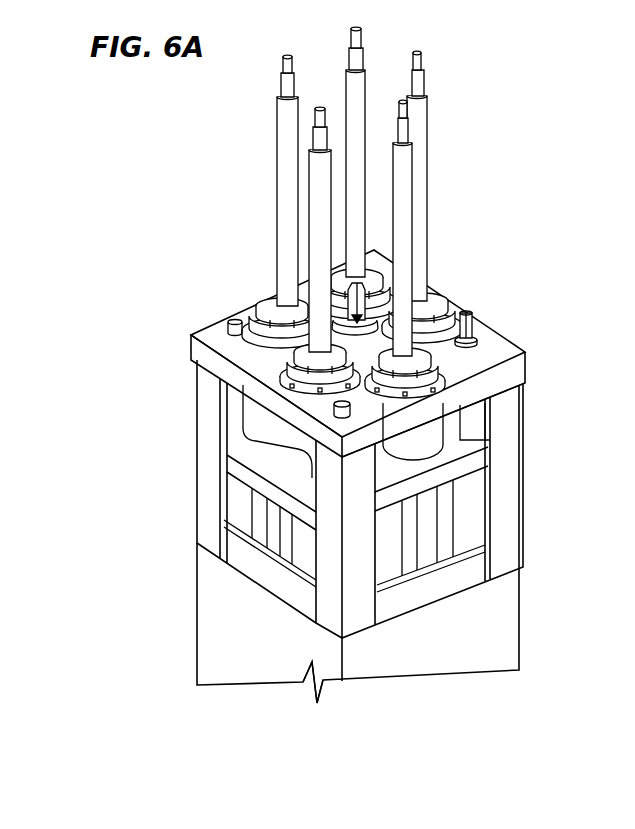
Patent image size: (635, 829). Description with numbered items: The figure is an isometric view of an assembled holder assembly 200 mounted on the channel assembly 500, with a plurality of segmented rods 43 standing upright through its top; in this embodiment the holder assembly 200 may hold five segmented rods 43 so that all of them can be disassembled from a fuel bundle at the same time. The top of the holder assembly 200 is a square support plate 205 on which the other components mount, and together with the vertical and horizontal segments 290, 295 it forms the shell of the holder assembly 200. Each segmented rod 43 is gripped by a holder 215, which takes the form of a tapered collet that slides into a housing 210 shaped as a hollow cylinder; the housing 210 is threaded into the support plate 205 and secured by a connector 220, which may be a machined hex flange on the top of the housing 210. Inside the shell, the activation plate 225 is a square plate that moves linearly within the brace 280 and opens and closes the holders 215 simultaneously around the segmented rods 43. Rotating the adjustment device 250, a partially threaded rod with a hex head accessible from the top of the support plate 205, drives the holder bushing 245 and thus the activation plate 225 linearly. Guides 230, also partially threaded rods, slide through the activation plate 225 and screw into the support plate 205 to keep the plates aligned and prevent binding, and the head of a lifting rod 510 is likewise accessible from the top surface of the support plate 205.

The segmented rod 43 is at (229, 154).
The holder assembly 200 is at (494, 714).
The support plate 205 is at (497, 342).
The housing 210 is at (283, 455).
The holder 215 is at (283, 330).
The connector 220 is at (318, 392).
The activation plate 225 is at (453, 485).
The guide 230 is at (228, 325).
The holder bushing 245 is at (473, 430).
The adjustment device 250 is at (470, 312).
The brace 280 is at (181, 544).
The vertical segment 290 is at (327, 543).
The horizontal segment 295 is at (255, 573).
The channel assembly 500 is at (154, 683).
The lifting rod 510 is at (450, 408).